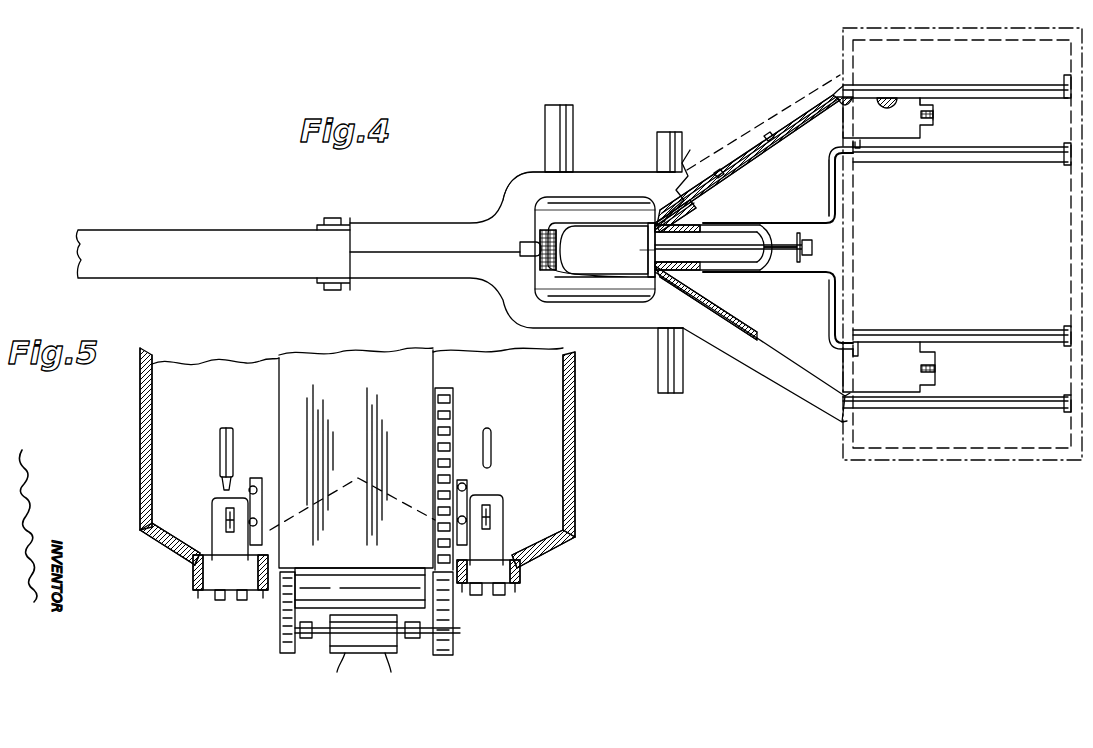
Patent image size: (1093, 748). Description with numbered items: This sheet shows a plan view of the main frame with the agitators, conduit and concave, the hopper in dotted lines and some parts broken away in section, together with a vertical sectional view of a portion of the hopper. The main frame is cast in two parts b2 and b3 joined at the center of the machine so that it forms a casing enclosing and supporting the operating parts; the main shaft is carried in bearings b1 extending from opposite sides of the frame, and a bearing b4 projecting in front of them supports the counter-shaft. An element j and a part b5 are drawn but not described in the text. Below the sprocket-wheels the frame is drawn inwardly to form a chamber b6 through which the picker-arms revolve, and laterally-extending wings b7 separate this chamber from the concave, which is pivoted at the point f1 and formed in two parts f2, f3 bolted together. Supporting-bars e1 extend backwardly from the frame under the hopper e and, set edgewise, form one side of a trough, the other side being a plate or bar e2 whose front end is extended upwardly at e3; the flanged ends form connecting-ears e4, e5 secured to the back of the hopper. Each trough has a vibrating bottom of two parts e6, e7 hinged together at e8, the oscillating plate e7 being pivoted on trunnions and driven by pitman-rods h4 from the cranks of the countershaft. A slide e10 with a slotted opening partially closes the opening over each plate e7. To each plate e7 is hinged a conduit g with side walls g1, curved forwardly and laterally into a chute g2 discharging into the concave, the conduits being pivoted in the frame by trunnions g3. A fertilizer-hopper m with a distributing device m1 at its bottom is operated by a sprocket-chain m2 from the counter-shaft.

In FIG. 4, the supporting arm j is at (213, 254).
In FIG. 4, the bearings b1 is at (668, 360).
In FIG. 4, the main frame part b2 is at (517, 192).
In FIG. 4, the main frame part b3 is at (522, 308).
In FIG. 4, the bearing b4 is at (558, 112).
In FIG. 4, the arm extension b5 is at (492, 220).
In FIG. 4, the chamber b6 is at (595, 249).
In FIG. 4, the laterally-extending wings b7 is at (612, 305).
In FIG. 4, the pivot point of concave f1 is at (650, 248).
In FIG. 4, the concave part f2 is at (742, 196).
In FIG. 4, the concave part f3 is at (724, 262).
In FIG. 4, the conduit g is at (780, 249).
In FIG. 4, the side walls g1 is at (832, 212).
In FIG. 4, the chute g2 is at (672, 316).
In FIG. 4, the trunnions g3 is at (664, 210).
In FIG. 4, the hopper e is at (792, 124).
In FIG. 5, the hopper e is at (335, 458).
In FIG. 4, the supporting-bars e1 is at (960, 408).
In FIG. 5, the supporting-bars e1 is at (582, 596).
In FIG. 4, the plate or bar e2 is at (953, 160).
In FIG. 5, the plate or bar e2 is at (470, 612).
In FIG. 5, the upwardly extended front end e3 is at (259, 493).
In FIG. 4, the connecting-ear e4 is at (888, 96).
In FIG. 5, the connecting-ear e4 is at (197, 590).
In FIG. 4, the connecting-ear e5 is at (1062, 80).
In FIG. 5, the connecting-ear e5 is at (470, 478).
In FIG. 4, the rear portion of vibrating bottom e6 is at (971, 239).
In FIG. 4, the oscillating plate e7 is at (889, 245).
In FIG. 5, the oscillating plate e7 is at (518, 612).
In FIG. 4, the hinge e8 is at (921, 99).
In FIG. 5, the slide e10 is at (530, 515).
In FIG. 5, the pitman-rods h4 is at (224, 452).
In FIG. 5, the fertilizer-hopper m is at (352, 459).
In FIG. 5, the distributing device m1 is at (377, 620).
In FIG. 5, the sprocket-chain m2 is at (445, 432).